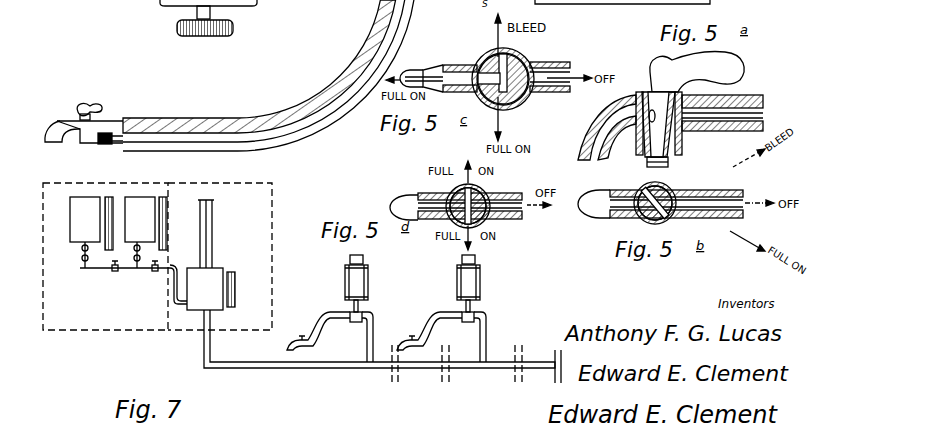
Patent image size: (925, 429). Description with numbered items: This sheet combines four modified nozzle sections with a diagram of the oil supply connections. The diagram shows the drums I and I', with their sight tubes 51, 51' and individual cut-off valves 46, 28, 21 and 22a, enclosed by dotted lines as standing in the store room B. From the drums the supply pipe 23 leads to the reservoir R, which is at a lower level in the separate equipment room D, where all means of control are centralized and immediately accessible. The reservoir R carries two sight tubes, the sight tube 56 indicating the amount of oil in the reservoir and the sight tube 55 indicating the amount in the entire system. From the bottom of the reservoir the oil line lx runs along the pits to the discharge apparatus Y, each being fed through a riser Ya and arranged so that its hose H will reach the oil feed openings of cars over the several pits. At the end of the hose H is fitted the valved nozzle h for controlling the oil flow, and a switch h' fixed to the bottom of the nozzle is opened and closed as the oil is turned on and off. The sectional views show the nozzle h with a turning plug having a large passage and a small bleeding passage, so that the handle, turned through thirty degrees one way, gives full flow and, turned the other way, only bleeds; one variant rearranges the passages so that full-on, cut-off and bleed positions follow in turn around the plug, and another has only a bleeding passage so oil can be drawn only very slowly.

In FIG. 5C, the valved nozzle h is at (485, 73).
In FIG. 5A, the valved nozzle h is at (670, 109).
In FIG. 5B, the valved nozzle h is at (660, 195).
In FIG. 5D, the valved nozzle h is at (456, 206).
In FIG. 5C, the switch h' is at (84, 132).
In FIG. 7, the stack tube 51 is at (125, 209).
In FIG. 7, the stack tube 51' is at (175, 209).
In FIG. 7, the sight tube 55 is at (208, 232).
In FIG. 7, the sight tube 56 is at (236, 289).
In FIG. 7, the valve 46 is at (82, 249).
In FIG. 7, the valve 28 is at (82, 260).
In FIG. 7, the valve 21 is at (134, 258).
In FIG. 7, the valve 22a is at (115, 272).
In FIG. 7, the supply pipe 23 is at (173, 290).
In FIG. 7, the drum I is at (85, 219).
In FIG. 7, the drum I' is at (140, 219).
In FIG. 7, the reservoir R is at (205, 289).
In FIG. 7, the equipment room D is at (220, 256).
In FIG. 7, the store room B is at (105, 256).
In FIG. 7, the hose H is at (330, 315).
In FIG. 7, the discharge apparatus Y is at (422, 288).
In FIG. 7, the riser pipe Ya is at (374, 328).
In FIG. 7, the oil line lx is at (382, 348).